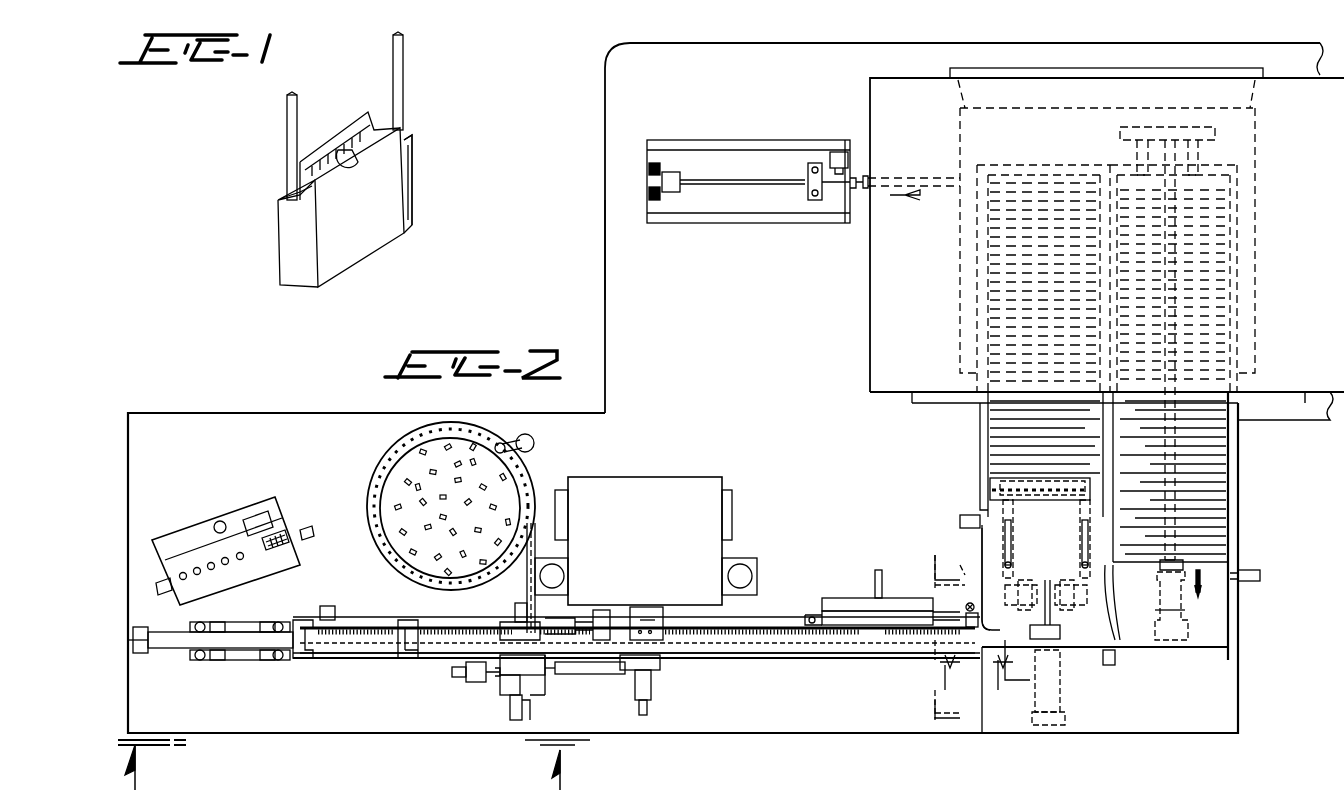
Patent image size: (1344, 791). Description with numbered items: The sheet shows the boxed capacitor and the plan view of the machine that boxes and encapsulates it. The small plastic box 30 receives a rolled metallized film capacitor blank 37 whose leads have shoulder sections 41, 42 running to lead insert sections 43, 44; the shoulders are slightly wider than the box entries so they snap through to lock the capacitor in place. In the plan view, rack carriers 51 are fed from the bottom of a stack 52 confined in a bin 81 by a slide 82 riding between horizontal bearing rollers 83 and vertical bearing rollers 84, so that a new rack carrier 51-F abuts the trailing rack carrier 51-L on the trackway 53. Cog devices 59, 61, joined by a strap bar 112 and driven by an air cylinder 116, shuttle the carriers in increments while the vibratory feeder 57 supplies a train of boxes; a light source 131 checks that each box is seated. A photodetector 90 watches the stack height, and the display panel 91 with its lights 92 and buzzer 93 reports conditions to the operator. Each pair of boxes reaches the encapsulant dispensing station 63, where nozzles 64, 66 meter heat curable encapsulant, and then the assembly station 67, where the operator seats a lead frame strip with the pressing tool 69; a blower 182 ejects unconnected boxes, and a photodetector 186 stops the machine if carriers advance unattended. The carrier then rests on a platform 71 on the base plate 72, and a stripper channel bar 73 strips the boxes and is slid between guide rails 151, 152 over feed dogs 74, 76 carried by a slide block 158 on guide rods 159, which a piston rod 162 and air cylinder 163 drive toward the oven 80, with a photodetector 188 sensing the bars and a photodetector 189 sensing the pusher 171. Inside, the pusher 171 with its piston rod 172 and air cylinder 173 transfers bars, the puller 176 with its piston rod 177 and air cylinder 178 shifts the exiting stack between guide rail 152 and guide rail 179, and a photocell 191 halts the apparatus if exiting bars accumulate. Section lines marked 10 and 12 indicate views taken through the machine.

In FIG. 1, the plastic box 30 is at (375, 238).
In FIG. 1, the rolled metallized film capacitor blank 37 is at (347, 158).
In FIG. 1, the shoulder section 41 is at (290, 196).
In FIG. 1, the shoulder section 42 is at (410, 146).
In FIG. 1, the lead insert section 43 is at (287, 137).
In FIG. 1, the lead insert section 44 is at (404, 82).
In FIG. 2, the section line 10 is at (982, 643).
In FIG. 2, the section line 12 is at (972, 672).
In FIG. 2, the rack carrier 51 is at (346, 656).
In FIG. 2, the new rack carrier 51-F is at (462, 640).
In FIG. 2, the trailing rack carrier 51-L is at (625, 628).
In FIG. 2, the stack 52 is at (366, 658).
In FIG. 2, the trackway 53 is at (708, 657).
In FIG. 2, the vibratory feeder 57 is at (535, 468).
In FIG. 2, the cog device 59 is at (517, 727).
In FIG. 2, the cog device 61 is at (653, 717).
In FIG. 2, the encapsulant dispensing station 63 is at (660, 536).
In FIG. 2, the nozzle 64 is at (641, 628).
In FIG. 2, the nozzle 66 is at (651, 628).
In FIG. 2, the assembly station 67 is at (886, 638).
In FIG. 2, the pressing tool 69 is at (860, 598).
In FIG. 2, the platform 71 is at (1088, 644).
In FIG. 2, the base plate 72 is at (605, 233).
In FIG. 2, the stripper channel bar 73 is at (1212, 412).
In FIG. 2, the feed dog 74 is at (1012, 568).
In FIG. 2, the feed dog 76 is at (1087, 568).
In FIG. 2, the oven 80 is at (925, 290).
In FIG. 2, the bin 81 is at (300, 620).
In FIG. 2, the slide 82 is at (168, 650).
In FIG. 2, the horizontal bearing roller 83 is at (268, 660).
In FIG. 2, the vertical bearing roller 84 is at (255, 622).
In FIG. 2, the photodetector 90 is at (328, 606).
In FIG. 2, the display panel 91 is at (205, 533).
In FIG. 2, the light 92 is at (210, 562).
In FIG. 2, the buzzer 93 is at (222, 520).
In FIG. 2, the strap bar 112 is at (588, 675).
In FIG. 2, the air cylinder 116 is at (460, 672).
In FIG. 2, the light source 131 is at (517, 612).
In FIG. 2, the guide rail 151 is at (980, 540).
In FIG. 2, the guide rail 152 is at (1125, 572).
In FIG. 2, the slide block 158 is at (1115, 642).
In FIG. 2, the guide rod 159 is at (1070, 478).
In FIG. 2, the piston rod 162 is at (1040, 605).
In FIG. 2, the air cylinder 163 is at (1060, 677).
In FIG. 2, the pusher 171 is at (945, 177).
In FIG. 2, the piston rod 172 is at (835, 195).
In FIG. 2, the air cylinder 173 is at (775, 195).
In FIG. 2, the puller 176 is at (1200, 160).
In FIG. 2, the piston rod 177 is at (1175, 475).
In FIG. 2, the air cylinder 178 is at (1185, 615).
In FIG. 2, the guide rail 179 is at (1238, 508).
In FIG. 2, the blower 182 is at (968, 603).
In FIG. 2, the photodetector 186 is at (1115, 660).
In FIG. 2, the photodetector 188 is at (970, 515).
In FIG. 2, the photodetector 189 is at (840, 152).
In FIG. 2, the photocell 191 is at (1255, 570).